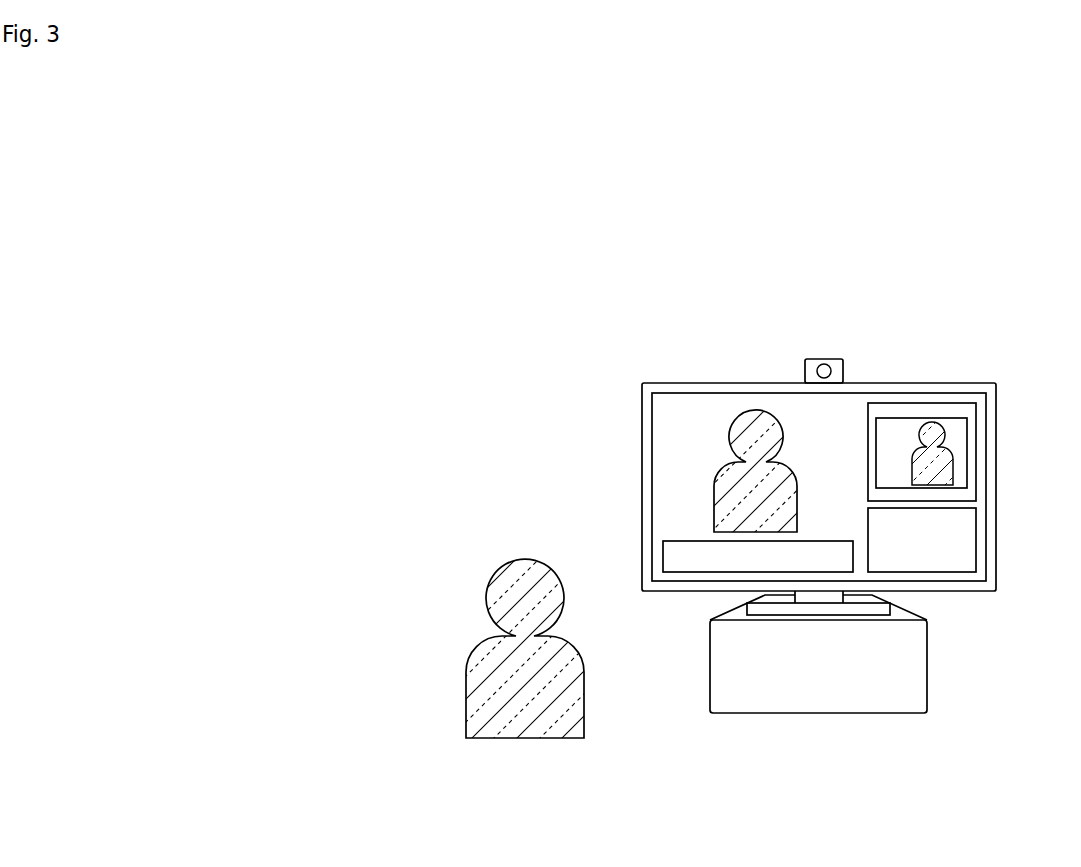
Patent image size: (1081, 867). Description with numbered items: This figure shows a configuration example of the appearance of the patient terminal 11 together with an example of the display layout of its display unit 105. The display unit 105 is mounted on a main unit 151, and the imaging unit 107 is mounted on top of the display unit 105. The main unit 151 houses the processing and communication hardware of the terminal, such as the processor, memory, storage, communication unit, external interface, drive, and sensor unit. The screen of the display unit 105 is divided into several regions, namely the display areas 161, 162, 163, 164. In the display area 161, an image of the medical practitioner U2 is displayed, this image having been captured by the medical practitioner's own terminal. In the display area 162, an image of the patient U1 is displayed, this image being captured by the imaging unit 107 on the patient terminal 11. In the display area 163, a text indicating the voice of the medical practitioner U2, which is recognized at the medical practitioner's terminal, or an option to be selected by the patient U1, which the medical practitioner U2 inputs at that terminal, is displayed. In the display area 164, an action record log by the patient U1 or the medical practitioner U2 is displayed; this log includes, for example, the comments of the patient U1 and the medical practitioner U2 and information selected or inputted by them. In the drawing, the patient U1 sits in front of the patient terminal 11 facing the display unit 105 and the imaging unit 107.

The patient terminal 11 is at (511, 411).
The display unit 105 is at (952, 383).
The imaging unit 107 is at (834, 360).
The main unit 151 is at (927, 668).
The display area 161 is at (707, 407).
The display area 162 is at (960, 450).
The display area 163 is at (685, 555).
The display area 164 is at (957, 543).
The patient U1 is at (466, 700).
The medical practitioner U2 is at (797, 510).